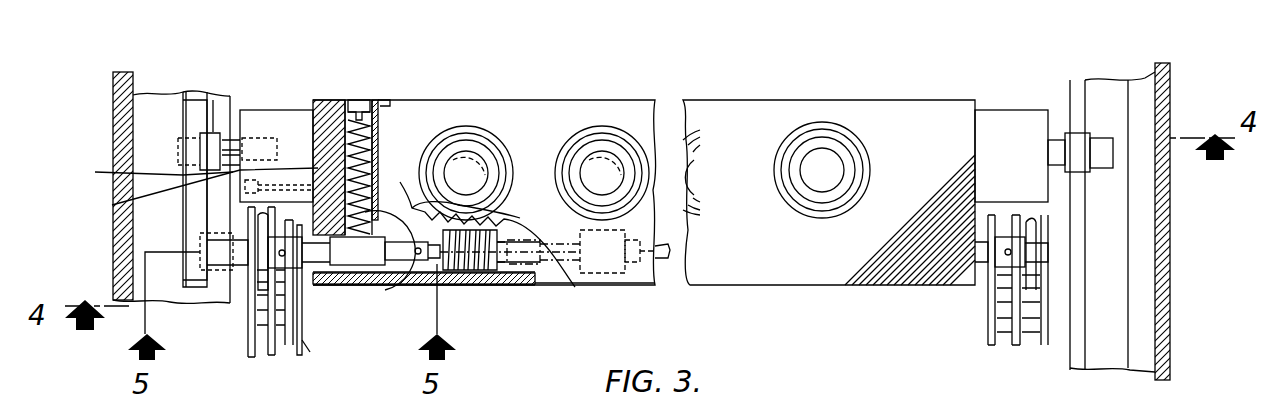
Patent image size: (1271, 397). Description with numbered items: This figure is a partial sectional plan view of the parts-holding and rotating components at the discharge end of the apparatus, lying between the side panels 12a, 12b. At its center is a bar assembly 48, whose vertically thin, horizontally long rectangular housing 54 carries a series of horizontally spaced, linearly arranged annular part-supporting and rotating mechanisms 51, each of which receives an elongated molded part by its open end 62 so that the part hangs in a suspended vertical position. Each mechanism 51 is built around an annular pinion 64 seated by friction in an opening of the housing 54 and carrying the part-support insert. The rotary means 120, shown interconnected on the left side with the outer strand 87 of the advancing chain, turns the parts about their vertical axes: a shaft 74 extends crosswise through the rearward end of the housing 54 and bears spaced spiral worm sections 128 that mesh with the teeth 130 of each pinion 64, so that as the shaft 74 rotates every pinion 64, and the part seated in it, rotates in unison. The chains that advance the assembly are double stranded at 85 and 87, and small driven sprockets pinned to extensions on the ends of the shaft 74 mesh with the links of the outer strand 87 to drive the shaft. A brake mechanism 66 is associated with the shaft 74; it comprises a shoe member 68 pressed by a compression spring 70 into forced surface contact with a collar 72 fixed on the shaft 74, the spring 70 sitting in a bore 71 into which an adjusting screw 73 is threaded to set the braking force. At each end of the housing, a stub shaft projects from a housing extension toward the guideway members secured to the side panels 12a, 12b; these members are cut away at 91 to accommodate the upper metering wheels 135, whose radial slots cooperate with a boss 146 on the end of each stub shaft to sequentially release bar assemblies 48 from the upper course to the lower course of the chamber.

The side panel 12a is at (1155, 178).
The side panel 12b is at (133, 120).
The bar assembly 48 is at (536, 95).
The part-supporting and rotating mechanism 51 is at (486, 128).
The housing 54 is at (385, 100).
The open end 62 is at (463, 150).
The annular pinion 64 is at (560, 272).
The brake mechanism 66 is at (393, 200).
The shoe member 68 is at (402, 268).
The compression spring 70 is at (345, 175).
The bore 71 is at (362, 110).
The collar 72 is at (363, 260).
The adjusting screw 73 is at (376, 102).
The shaft 74 is at (433, 266).
The chain strand 85 is at (298, 356).
The outer chain strand 87 is at (250, 358).
The cut-away portion 91 is at (196, 110).
The rotary means 120 is at (186, 192).
The worm section 128 is at (472, 284).
The teeth 130 is at (343, 295).
The upper metering wheel 135 is at (248, 388).
The boss 146 is at (140, 171).